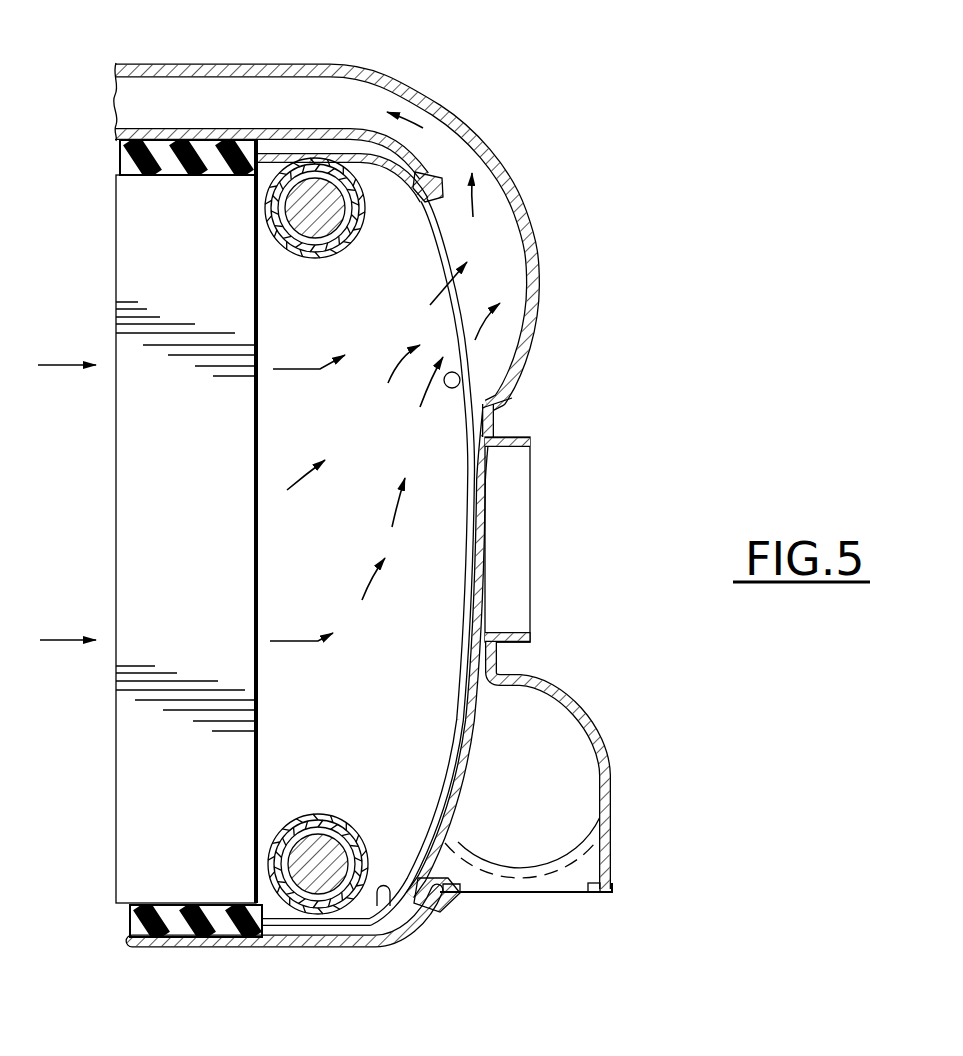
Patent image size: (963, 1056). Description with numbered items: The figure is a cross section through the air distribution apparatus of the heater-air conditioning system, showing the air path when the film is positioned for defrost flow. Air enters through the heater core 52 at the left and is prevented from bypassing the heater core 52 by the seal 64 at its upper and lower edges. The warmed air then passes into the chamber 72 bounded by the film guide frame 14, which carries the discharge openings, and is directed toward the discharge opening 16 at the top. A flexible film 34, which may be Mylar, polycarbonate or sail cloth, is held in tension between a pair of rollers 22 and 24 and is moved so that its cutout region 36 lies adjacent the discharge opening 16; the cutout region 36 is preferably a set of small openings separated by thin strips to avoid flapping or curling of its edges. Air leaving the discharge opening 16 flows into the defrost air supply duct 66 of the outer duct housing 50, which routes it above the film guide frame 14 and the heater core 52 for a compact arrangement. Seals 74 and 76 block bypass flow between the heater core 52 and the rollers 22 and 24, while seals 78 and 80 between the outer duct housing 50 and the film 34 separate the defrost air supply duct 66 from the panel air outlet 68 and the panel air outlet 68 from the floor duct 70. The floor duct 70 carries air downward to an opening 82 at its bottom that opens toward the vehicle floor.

The film guide frame 14 is at (384, 918).
The discharge opening 16 is at (462, 383).
The roller 22 is at (289, 207).
The roller 24 is at (318, 847).
The flexible film 34 is at (488, 509).
The cutout region 36 is at (478, 352).
The outer duct housing 50 is at (270, 947).
The heater core 52 is at (120, 744).
The seal 64 is at (130, 160).
The defrost air supply duct 66 is at (357, 95).
The panel air outlet 68 is at (507, 627).
The floor duct 70 is at (583, 787).
The chamber 72 is at (423, 797).
The seal 74 is at (428, 186).
The seal 76 is at (424, 913).
The seal 78 is at (494, 424).
The seal 80 is at (500, 651).
The floor opening 82 is at (587, 897).